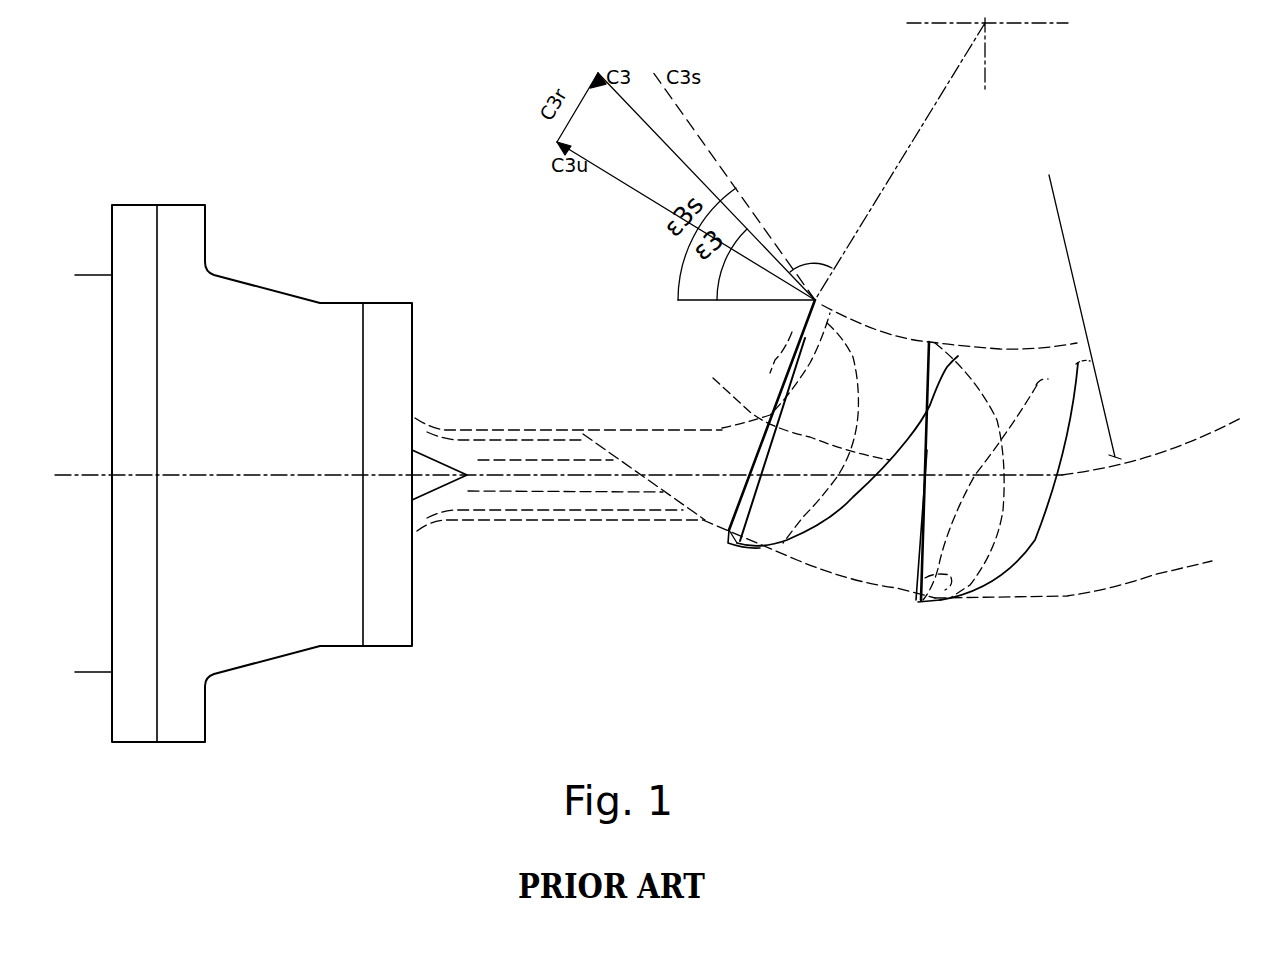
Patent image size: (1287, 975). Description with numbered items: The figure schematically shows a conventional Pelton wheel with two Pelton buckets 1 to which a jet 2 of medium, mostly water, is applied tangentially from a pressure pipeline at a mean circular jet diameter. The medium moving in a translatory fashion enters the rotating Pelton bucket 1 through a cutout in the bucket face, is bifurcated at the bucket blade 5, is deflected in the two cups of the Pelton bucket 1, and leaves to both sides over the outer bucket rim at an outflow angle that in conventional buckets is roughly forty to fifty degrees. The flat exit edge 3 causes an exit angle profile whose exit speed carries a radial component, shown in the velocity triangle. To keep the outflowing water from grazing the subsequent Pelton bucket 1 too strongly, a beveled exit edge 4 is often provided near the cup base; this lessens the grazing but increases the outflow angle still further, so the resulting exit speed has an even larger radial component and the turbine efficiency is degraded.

The Pelton bucket 1 is at (827, 417).
The jet 2 is at (508, 498).
The flat exit edge 3 is at (782, 552).
The beveled exit edge 4 is at (832, 311).
The bucket blade 5 is at (750, 442).